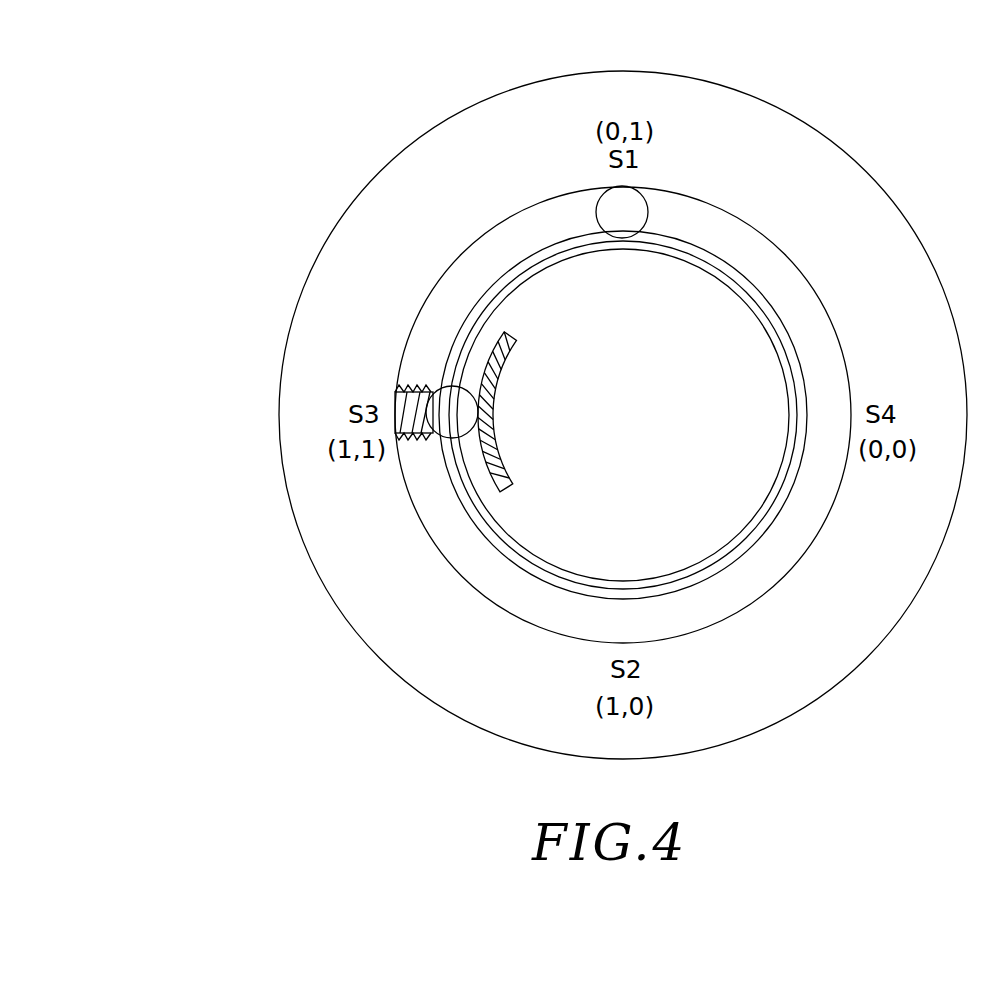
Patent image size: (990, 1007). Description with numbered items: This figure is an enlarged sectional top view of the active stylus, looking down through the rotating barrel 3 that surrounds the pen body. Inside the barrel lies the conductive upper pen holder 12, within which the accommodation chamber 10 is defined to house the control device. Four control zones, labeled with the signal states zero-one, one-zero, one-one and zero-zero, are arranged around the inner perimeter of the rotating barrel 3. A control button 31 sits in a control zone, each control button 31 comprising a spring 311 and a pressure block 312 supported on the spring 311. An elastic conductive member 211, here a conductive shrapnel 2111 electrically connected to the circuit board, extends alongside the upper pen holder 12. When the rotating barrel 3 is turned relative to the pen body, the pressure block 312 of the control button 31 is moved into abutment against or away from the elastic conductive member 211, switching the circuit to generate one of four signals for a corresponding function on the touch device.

The rotating barrel 3 is at (390, 190).
The accommodation chamber 10 is at (537, 317).
The upper pen holder 12 is at (725, 270).
The elastic conductive member 211 is at (198, 322).
The conductive shrapnel 2111 is at (495, 352).
The control button 31 is at (185, 418).
The spring 311 is at (396, 390).
The pressure block 312 is at (452, 420).